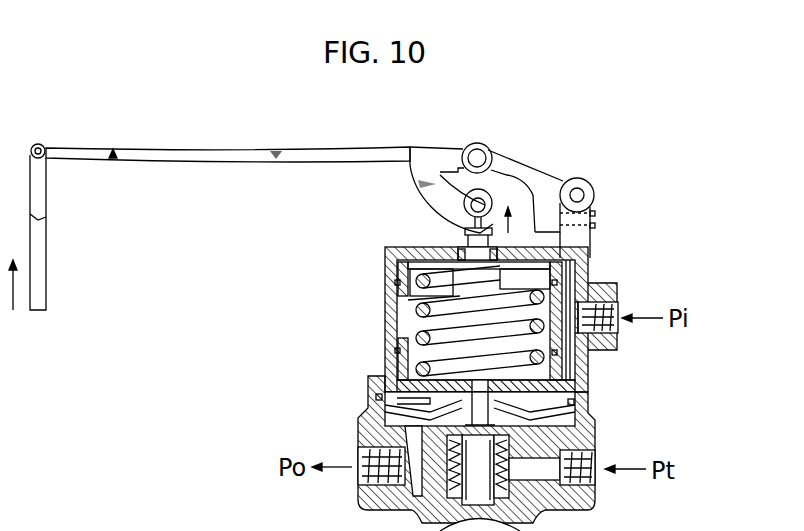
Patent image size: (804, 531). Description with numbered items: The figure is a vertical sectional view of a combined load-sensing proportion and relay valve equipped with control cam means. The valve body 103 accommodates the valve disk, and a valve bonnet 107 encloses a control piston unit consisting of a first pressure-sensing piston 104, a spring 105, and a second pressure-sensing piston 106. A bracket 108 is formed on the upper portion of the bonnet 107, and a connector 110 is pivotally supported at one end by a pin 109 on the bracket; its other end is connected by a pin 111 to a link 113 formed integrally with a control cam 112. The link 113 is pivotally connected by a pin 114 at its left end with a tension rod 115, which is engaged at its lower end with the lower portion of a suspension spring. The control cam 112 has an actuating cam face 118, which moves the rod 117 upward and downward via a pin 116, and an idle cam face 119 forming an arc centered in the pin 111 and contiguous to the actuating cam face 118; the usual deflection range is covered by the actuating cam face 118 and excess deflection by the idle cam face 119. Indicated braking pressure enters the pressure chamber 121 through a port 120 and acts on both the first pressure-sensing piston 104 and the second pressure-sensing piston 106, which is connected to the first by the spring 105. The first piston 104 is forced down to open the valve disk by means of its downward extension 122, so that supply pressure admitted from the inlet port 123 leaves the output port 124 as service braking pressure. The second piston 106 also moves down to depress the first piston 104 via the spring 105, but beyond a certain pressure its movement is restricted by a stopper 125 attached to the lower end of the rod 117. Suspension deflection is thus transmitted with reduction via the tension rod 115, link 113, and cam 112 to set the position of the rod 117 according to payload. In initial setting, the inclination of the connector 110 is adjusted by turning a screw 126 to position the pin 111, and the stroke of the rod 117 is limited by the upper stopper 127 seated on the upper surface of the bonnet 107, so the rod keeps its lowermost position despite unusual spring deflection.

The valve body 103 is at (578, 504).
The first pressure-sensing piston 104 is at (397, 376).
The spring 105 is at (556, 270).
The second pressure-sensing piston 106 is at (397, 272).
The valve bonnet 107 is at (583, 392).
The bracket 108 is at (583, 243).
The pin 109 is at (579, 188).
The connector 110 is at (517, 162).
The pin 111 is at (477, 150).
The control cam 112 is at (413, 173).
The link 113 is at (270, 150).
The pin 114 is at (44, 147).
The tension rod 115 is at (40, 296).
The pin 116 is at (471, 205).
The rod 117 is at (470, 285).
The actuating cam face 118 is at (538, 225).
The idle cam face 119 is at (452, 172).
The port 120 is at (612, 305).
The pressure chamber 121 is at (574, 345).
The downward extension 122 is at (378, 400).
The inlet port 123 is at (594, 462).
The output port 124 is at (364, 475).
The stopper 125 is at (400, 300).
The screw 126 is at (597, 213).
The upper stopper 127 is at (463, 230).